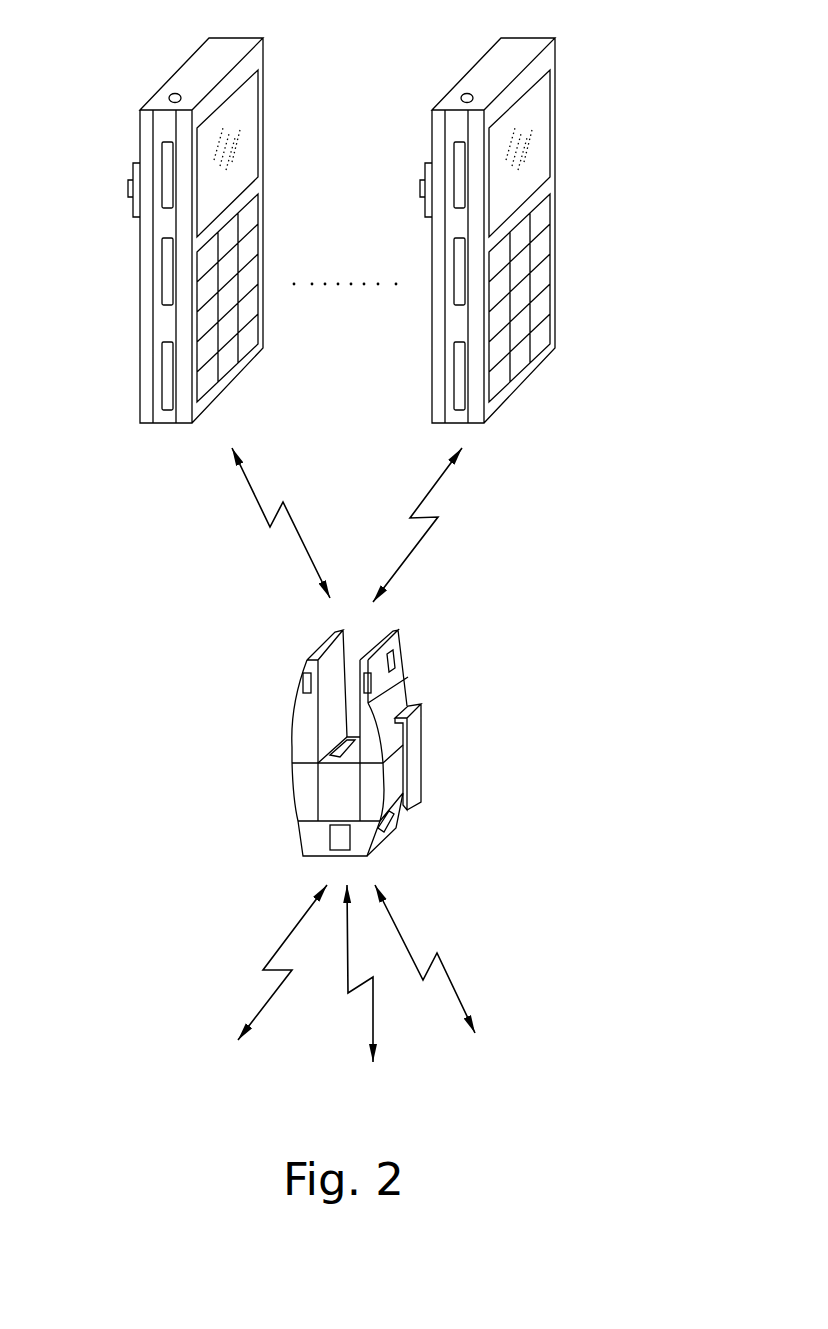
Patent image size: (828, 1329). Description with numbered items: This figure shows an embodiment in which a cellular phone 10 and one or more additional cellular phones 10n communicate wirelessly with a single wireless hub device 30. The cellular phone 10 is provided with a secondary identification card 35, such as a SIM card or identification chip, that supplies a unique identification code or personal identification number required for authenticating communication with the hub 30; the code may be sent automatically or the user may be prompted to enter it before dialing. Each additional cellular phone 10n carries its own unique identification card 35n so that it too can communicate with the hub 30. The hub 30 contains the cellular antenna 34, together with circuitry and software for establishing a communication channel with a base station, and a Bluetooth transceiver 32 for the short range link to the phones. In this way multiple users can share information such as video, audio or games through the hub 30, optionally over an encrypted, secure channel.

The cellular phone 10 is at (543, 225).
The additional cellular phone 10n is at (162, 230).
The secondary identification card 35 is at (455, 378).
The unique identification card 35n is at (168, 377).
The wireless hub device 30 is at (327, 725).
The Bluetooth transceiver 32 is at (342, 836).
The antenna 34 is at (307, 660).